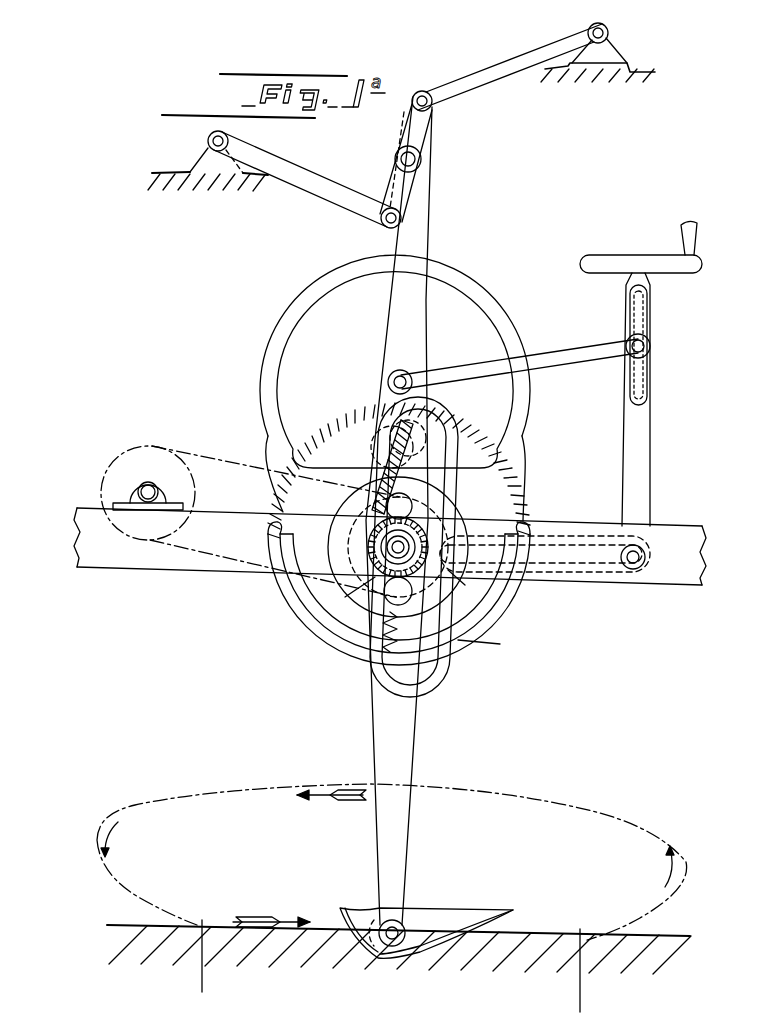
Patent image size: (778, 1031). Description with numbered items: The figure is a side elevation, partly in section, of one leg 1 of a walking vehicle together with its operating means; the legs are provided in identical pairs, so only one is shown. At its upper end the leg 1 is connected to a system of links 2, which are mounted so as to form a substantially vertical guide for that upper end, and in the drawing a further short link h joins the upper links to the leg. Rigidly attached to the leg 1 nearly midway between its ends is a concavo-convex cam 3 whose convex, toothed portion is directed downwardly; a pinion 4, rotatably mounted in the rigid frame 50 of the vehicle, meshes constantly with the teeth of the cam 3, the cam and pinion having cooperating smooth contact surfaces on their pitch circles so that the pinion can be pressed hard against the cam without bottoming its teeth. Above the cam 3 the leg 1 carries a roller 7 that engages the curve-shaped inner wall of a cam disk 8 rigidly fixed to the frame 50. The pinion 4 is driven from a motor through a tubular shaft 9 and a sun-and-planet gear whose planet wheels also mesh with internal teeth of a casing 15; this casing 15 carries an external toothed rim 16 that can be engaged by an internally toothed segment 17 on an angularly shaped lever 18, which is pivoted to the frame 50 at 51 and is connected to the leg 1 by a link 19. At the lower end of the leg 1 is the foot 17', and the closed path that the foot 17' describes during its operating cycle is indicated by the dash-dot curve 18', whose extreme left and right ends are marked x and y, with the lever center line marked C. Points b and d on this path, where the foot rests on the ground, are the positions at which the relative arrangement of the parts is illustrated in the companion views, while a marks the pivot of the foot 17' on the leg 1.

The leg 1 is at (408, 310).
The system of links 2 is at (420, 127).
The connecting link h is at (418, 159).
The concavo-convex cam 3 is at (333, 648).
The pinion 4 is at (424, 536).
The roller 7 is at (393, 430).
The cam disk 8 is at (395, 388).
The tubular shaft 9 is at (350, 597).
The casing 15 is at (493, 650).
The external toothed rim 16 is at (465, 591).
The internally toothed segment 17 is at (369, 467).
The angularly shaped lever 18 is at (638, 373).
The link 19 is at (578, 353).
The frame 50 is at (185, 562).
The pivot 51 is at (633, 568).
The point c C is at (393, 789).
The path of the foot 18' is at (392, 852).
The path end x is at (98, 843).
The path end y is at (688, 867).
The pedal pivot a is at (398, 922).
The foot 17' is at (426, 915).
The point b is at (580, 938).
The point d is at (206, 924).